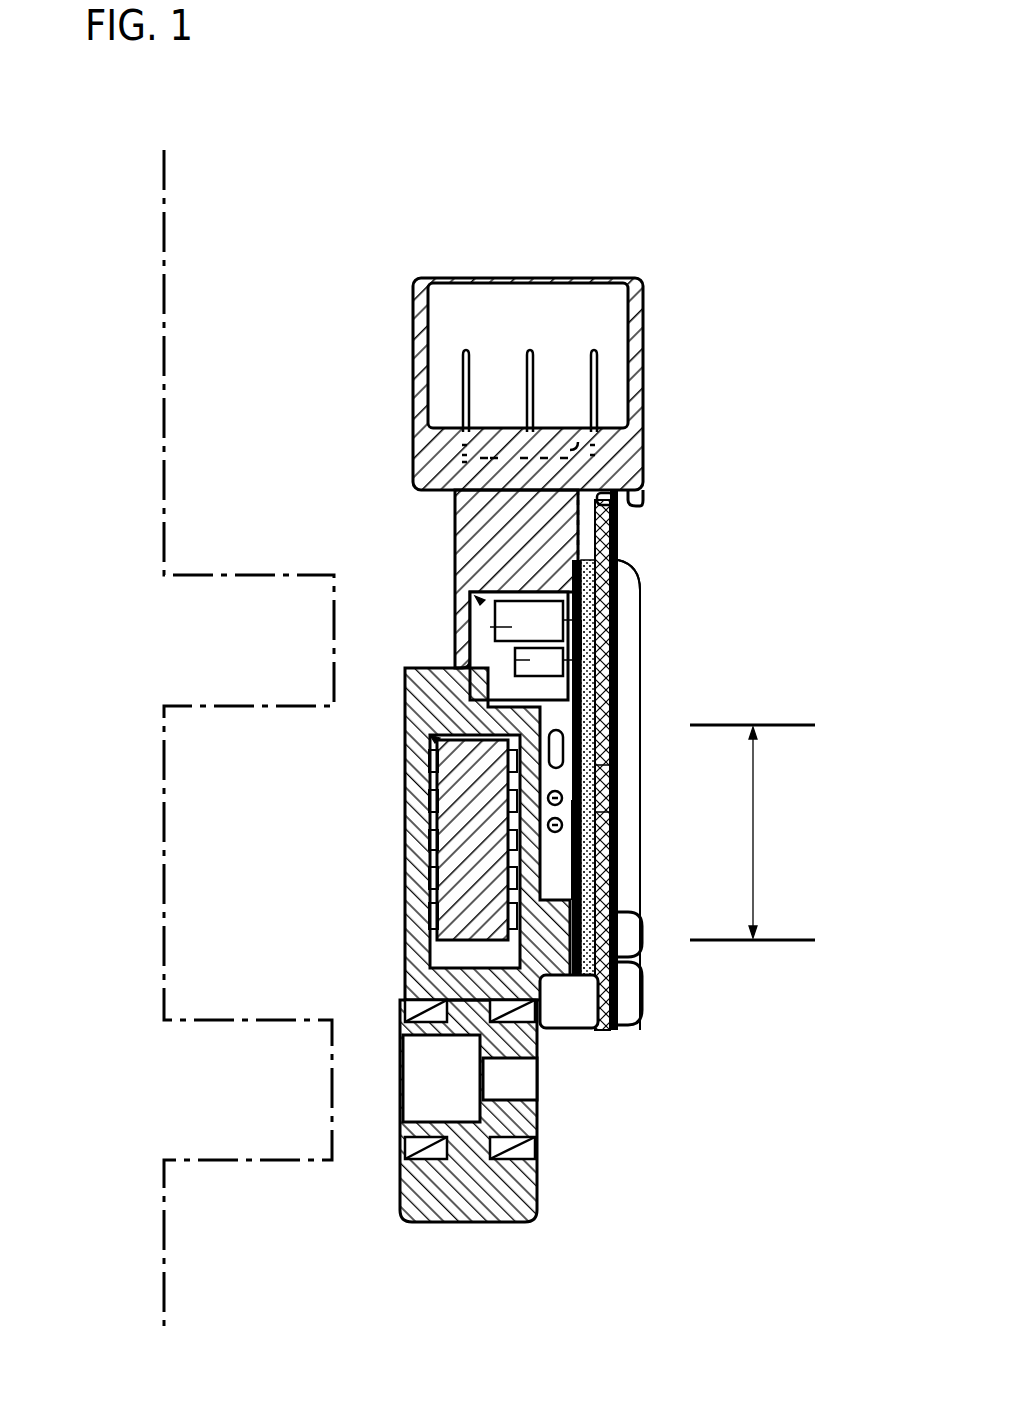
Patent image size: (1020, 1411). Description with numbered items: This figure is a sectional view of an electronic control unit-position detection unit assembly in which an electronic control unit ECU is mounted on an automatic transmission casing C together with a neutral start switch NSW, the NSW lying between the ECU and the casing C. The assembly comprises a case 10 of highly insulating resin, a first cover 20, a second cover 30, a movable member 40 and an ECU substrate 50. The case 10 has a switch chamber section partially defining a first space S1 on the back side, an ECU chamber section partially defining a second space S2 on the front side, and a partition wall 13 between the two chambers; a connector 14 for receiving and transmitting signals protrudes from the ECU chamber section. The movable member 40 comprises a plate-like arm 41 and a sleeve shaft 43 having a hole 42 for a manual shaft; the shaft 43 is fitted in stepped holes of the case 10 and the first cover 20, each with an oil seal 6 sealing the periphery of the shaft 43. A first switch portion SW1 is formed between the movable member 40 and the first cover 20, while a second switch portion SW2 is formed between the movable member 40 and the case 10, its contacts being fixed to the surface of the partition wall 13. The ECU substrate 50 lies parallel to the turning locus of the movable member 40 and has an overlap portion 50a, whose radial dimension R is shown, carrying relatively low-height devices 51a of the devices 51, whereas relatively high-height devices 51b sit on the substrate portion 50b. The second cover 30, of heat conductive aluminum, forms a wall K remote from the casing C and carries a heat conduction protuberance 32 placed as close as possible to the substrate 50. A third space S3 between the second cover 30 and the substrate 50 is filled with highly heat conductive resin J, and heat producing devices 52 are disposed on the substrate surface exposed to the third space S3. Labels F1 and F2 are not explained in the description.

The connector 14 is at (643, 352).
The case 10 is at (462, 530).
The automatic transmission casing C is at (170, 398).
The second space S2 is at (485, 600).
The third space S3 is at (602, 500).
The highly heat conductive resin J is at (632, 565).
The relatively high-height devices 51b is at (492, 605).
The devices 51 is at (512, 627).
The ECU substrate 50 is at (592, 600).
The heat conduction protuberance 32 is at (622, 610).
The substrate portion 50b is at (590, 640).
The electronic control unit ECU is at (592, 690).
The second switch portion SW2 is at (530, 677).
The first space S1 is at (440, 738).
The partition wall 13 is at (600, 707).
The first cover 20 is at (415, 720).
The first switch portion SW1 is at (440, 748).
The first flange F1 is at (508, 798).
The relatively low-height devices 51a is at (602, 765).
The plate-like arm 41 is at (465, 830).
The heat producing devices 52 is at (620, 830).
The radial dimension R is at (752, 832).
The second cover 30 is at (620, 848).
The neutral start switch NSW is at (440, 888).
The overlap portion 50a is at (620, 886).
The movable member 40 is at (432, 920).
The oil seal 6 is at (408, 1006).
The second flange F2 is at (569, 1001).
The wall K is at (638, 950).
The sleeve shaft 43 is at (527, 1040).
The hole 42 is at (427, 1100).